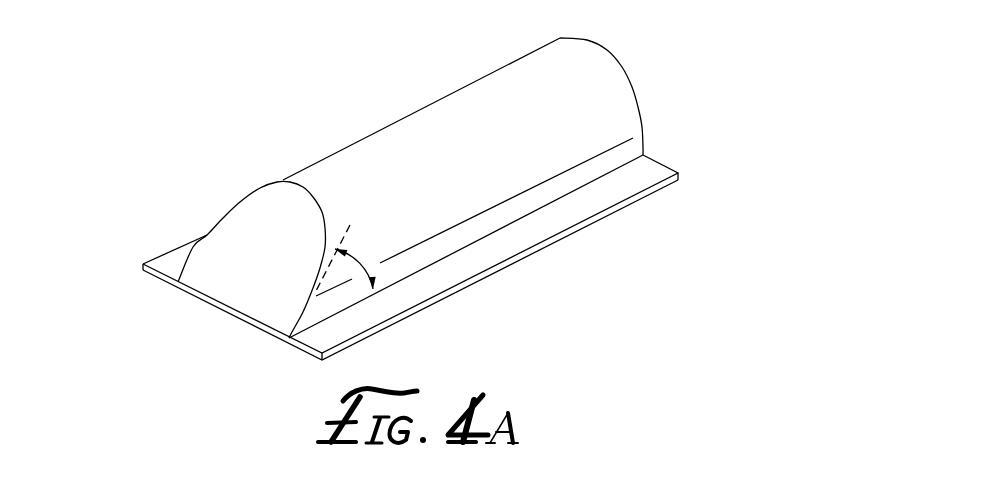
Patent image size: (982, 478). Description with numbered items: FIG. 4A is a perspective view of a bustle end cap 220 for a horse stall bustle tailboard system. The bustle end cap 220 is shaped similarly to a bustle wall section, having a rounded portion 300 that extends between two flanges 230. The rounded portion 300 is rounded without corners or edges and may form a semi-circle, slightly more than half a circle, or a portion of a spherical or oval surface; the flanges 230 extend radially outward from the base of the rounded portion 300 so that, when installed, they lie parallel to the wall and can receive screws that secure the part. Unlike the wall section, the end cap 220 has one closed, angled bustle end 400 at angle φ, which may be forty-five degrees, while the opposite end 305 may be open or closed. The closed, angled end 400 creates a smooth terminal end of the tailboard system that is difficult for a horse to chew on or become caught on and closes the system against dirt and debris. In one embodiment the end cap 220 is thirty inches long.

The bustle end cap 220 is at (432, 180).
The flange 230 is at (557, 209).
The rounded portion 300 is at (450, 169).
The end 305 is at (616, 62).
The closed, angled bustle end 400 is at (280, 265).